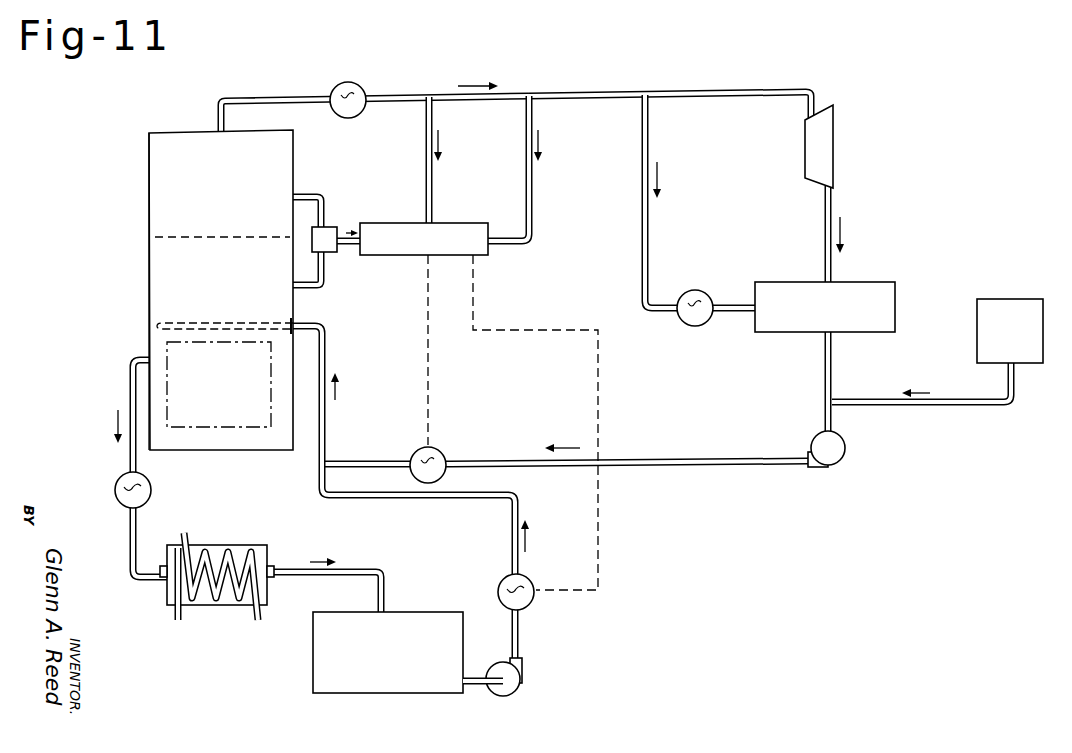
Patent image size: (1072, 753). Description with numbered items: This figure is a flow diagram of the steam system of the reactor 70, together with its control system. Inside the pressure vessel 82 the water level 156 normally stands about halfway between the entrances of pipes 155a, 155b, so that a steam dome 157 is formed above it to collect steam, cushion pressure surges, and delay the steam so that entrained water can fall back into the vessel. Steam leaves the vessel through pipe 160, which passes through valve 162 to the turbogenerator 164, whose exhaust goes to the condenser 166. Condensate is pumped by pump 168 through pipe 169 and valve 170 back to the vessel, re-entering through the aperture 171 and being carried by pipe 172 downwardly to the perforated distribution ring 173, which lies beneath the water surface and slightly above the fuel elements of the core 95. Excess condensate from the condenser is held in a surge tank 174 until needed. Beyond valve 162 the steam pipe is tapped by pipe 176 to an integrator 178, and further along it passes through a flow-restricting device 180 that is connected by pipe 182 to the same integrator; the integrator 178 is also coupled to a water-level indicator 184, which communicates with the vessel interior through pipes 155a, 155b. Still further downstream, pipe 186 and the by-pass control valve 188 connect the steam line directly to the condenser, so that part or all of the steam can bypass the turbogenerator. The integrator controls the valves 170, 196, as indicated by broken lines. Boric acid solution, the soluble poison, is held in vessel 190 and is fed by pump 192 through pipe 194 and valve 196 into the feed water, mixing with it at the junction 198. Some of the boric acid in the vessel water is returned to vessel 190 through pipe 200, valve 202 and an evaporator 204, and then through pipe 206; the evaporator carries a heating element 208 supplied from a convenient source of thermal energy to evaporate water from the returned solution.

The reactor 70 is at (143, 212).
The pressure vessel 82 is at (292, 157).
The core 95 is at (236, 386).
The pipe 155a is at (319, 195).
The pipe 155b is at (326, 286).
The water level 156 is at (241, 242).
The steam dome 157 is at (155, 162).
The pipe 160 is at (277, 93).
The valve 162 is at (363, 89).
The turbogenerator 164 is at (825, 131).
The condenser 166 is at (868, 283).
The pump 168 is at (845, 456).
The pipe 169 is at (700, 455).
The valve 170 is at (440, 453).
The aperture 171 is at (294, 322).
The pipe 172 is at (326, 346).
The perforated distribution ring 173 is at (240, 320).
The surge tank 174 is at (1018, 300).
The pipe 176 is at (434, 196).
The integrator 178 is at (467, 223).
The flow-restricting device 180 is at (532, 95).
The pipe 182 is at (534, 206).
The water-level indicator 184 is at (330, 237).
The pipe 186 is at (650, 257).
The by-pass control valve 188 is at (698, 296).
The vessel 190 is at (385, 692).
The pump 192 is at (522, 680).
The pipe 194 is at (521, 638).
The valve 196 is at (532, 600).
The junction 198 is at (330, 463).
The pipe 200 is at (139, 464).
The valve 202 is at (148, 497).
The evaporator 204 is at (220, 548).
The pipe 206 is at (388, 592).
The element 208 is at (196, 596).